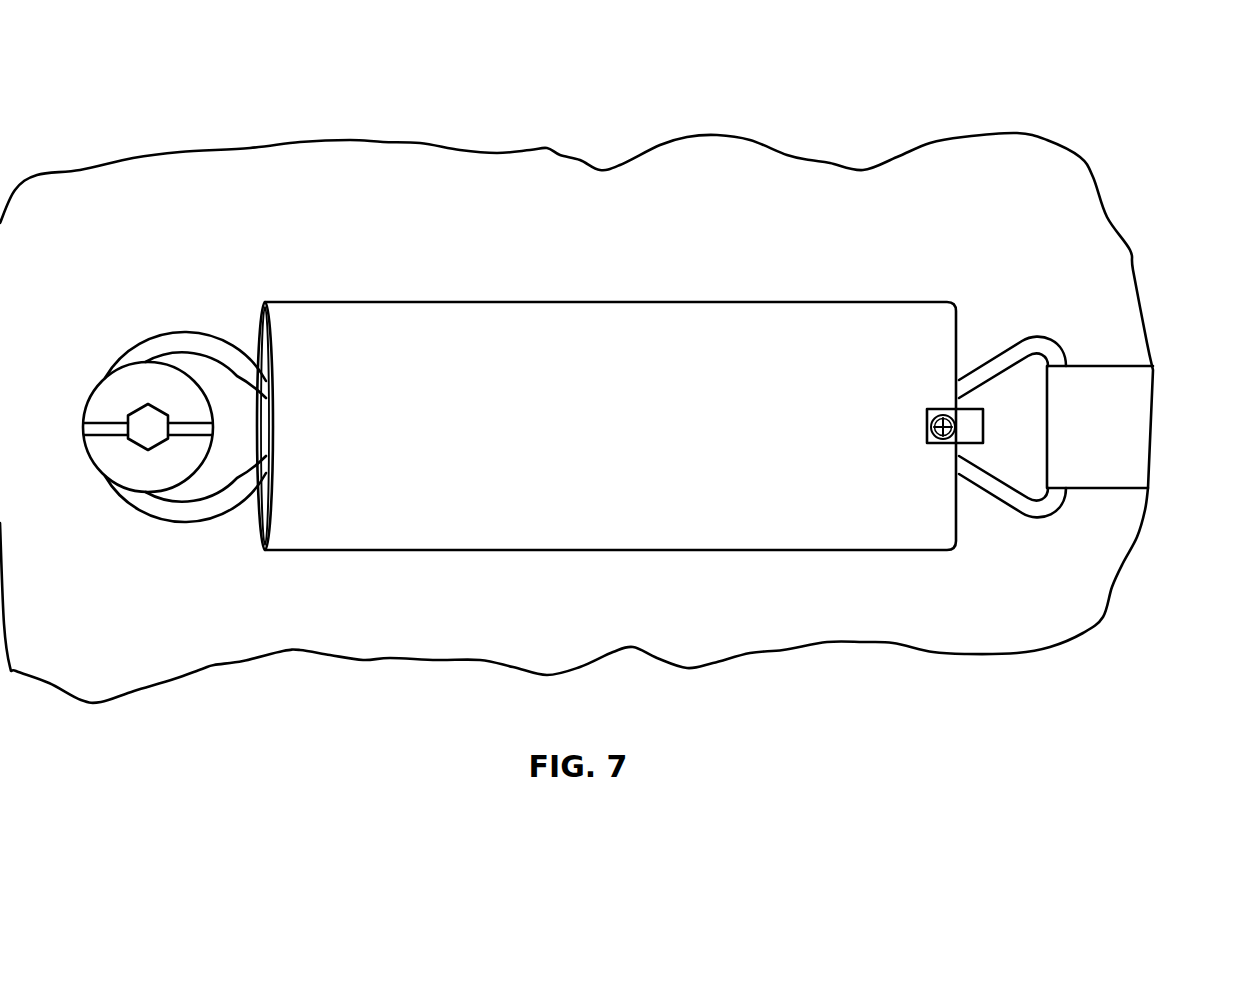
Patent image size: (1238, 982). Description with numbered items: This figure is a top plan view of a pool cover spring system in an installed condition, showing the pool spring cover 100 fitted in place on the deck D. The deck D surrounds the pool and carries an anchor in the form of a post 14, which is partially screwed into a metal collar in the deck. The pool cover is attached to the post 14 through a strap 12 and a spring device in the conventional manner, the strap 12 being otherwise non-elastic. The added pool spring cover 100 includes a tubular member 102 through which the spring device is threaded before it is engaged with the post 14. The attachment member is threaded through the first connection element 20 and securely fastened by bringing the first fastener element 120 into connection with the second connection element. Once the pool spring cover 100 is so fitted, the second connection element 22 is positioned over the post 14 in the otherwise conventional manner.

The pool spring cover 100 is at (585, 403).
The tubular member 102 is at (443, 313).
The first fastener element 120 is at (960, 378).
The second connection element 22 is at (193, 345).
The first connection element 20 is at (1028, 505).
The post 14 is at (110, 470).
The strap 12 is at (1123, 478).
The deck D is at (183, 167).